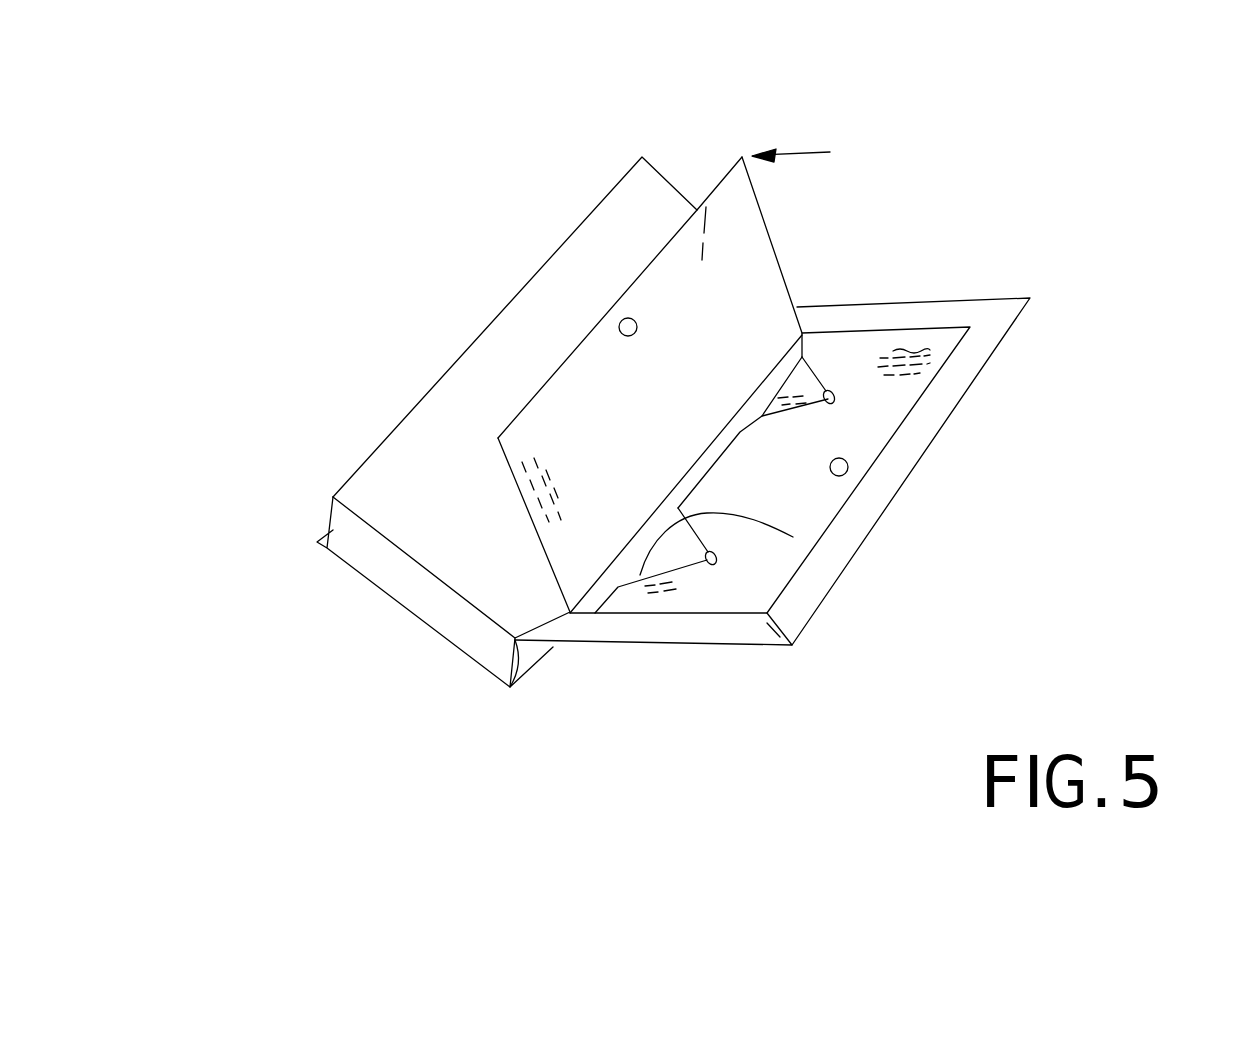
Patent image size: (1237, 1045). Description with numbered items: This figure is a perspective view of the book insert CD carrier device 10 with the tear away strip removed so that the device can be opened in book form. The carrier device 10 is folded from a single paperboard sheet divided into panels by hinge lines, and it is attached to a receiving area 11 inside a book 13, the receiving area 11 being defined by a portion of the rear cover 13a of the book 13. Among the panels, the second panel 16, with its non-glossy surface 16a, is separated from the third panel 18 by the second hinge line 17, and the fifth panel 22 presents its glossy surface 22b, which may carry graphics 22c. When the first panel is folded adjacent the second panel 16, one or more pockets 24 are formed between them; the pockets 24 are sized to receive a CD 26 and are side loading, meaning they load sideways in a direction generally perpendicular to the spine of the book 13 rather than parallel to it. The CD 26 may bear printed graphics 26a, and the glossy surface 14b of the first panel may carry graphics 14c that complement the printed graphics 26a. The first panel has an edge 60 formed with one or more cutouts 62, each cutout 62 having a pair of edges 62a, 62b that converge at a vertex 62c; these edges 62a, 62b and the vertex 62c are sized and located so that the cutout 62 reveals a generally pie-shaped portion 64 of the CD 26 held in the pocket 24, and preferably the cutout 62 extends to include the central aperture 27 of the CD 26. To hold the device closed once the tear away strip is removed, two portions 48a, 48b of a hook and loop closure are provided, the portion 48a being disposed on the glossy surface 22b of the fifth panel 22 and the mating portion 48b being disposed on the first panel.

The book insert CD carrier device 10 is at (539, 538).
The receiving area 11 is at (793, 647).
The book 13 is at (470, 663).
The rear cover 13a is at (1000, 343).
The glossy surface 14b is at (790, 586).
The graphics 14c is at (1030, 298).
The second panel 16 is at (764, 392).
The non-glossy surface 16a is at (767, 412).
The second hinge line 17 is at (718, 432).
The third panel 18 is at (708, 195).
The fifth panel 22 is at (757, 251).
The glossy surface 22b is at (620, 411).
The graphics 22c is at (520, 468).
The pockets 24 is at (747, 413).
The CD 26 is at (800, 383).
The printed graphics 26a is at (790, 412).
The aperture 27 is at (832, 405).
The hook and loop closure portion 48a is at (621, 322).
The hook and loop closure portion 48b is at (846, 474).
The edge 60 is at (713, 470).
The cutout 62 is at (834, 392).
The edge 62a is at (763, 420).
The edge 62b is at (845, 390).
The vertex 62c is at (918, 350).
The pie-shaped portion 64 is at (785, 387).